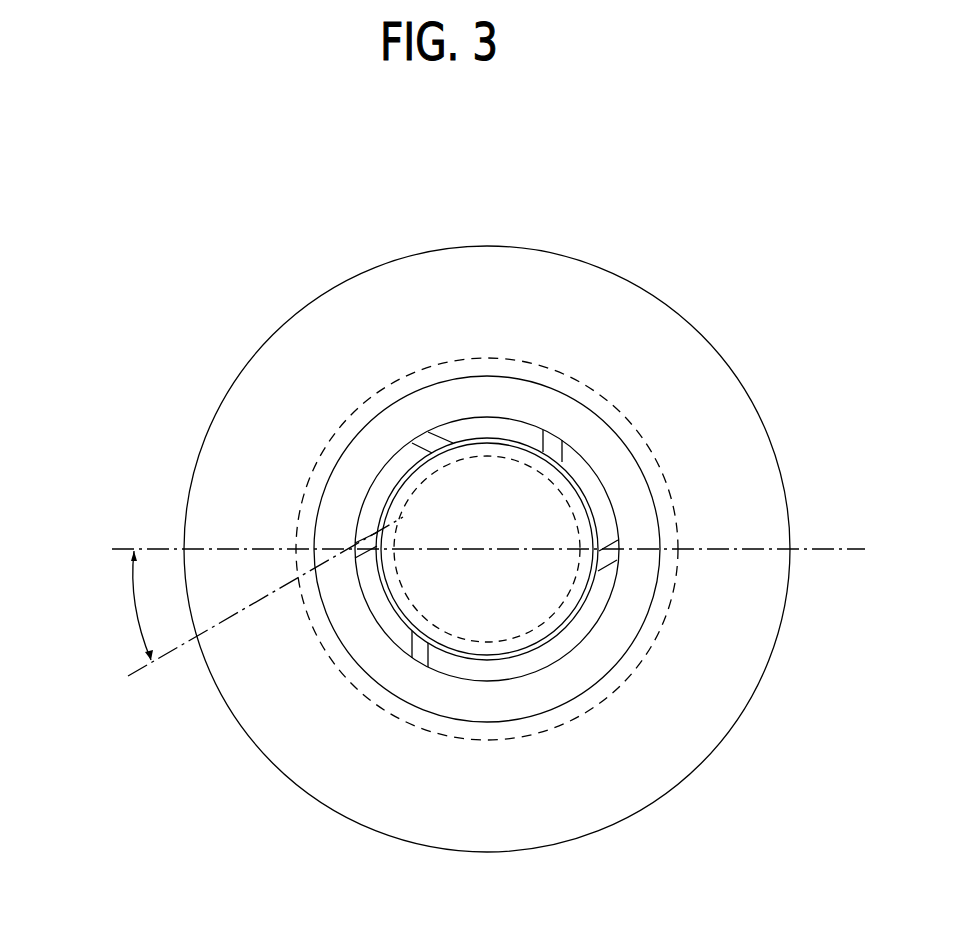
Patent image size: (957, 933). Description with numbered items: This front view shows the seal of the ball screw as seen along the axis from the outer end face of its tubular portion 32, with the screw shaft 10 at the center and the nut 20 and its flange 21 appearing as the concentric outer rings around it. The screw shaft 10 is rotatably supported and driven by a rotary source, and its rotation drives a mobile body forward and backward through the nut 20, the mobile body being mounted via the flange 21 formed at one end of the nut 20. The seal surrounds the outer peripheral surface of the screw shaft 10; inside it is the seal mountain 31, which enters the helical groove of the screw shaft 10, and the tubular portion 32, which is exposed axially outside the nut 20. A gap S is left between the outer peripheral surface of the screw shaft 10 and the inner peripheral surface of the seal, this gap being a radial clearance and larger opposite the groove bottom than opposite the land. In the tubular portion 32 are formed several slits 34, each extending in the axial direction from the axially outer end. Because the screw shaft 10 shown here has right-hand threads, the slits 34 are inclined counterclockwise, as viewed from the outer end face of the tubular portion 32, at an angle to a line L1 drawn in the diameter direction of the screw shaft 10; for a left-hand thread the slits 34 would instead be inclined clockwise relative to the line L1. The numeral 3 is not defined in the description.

The bearing assembly 3 is at (367, 493).
The screw shaft 10 is at (507, 467).
The nut 20 is at (605, 398).
The flange 21 is at (535, 262).
The seal mountain 31 is at (472, 460).
The tubular portion 32 is at (395, 470).
The slit 34 is at (432, 422).
The gap S is at (400, 618).
The line in the diameter direction L1 is at (122, 550).